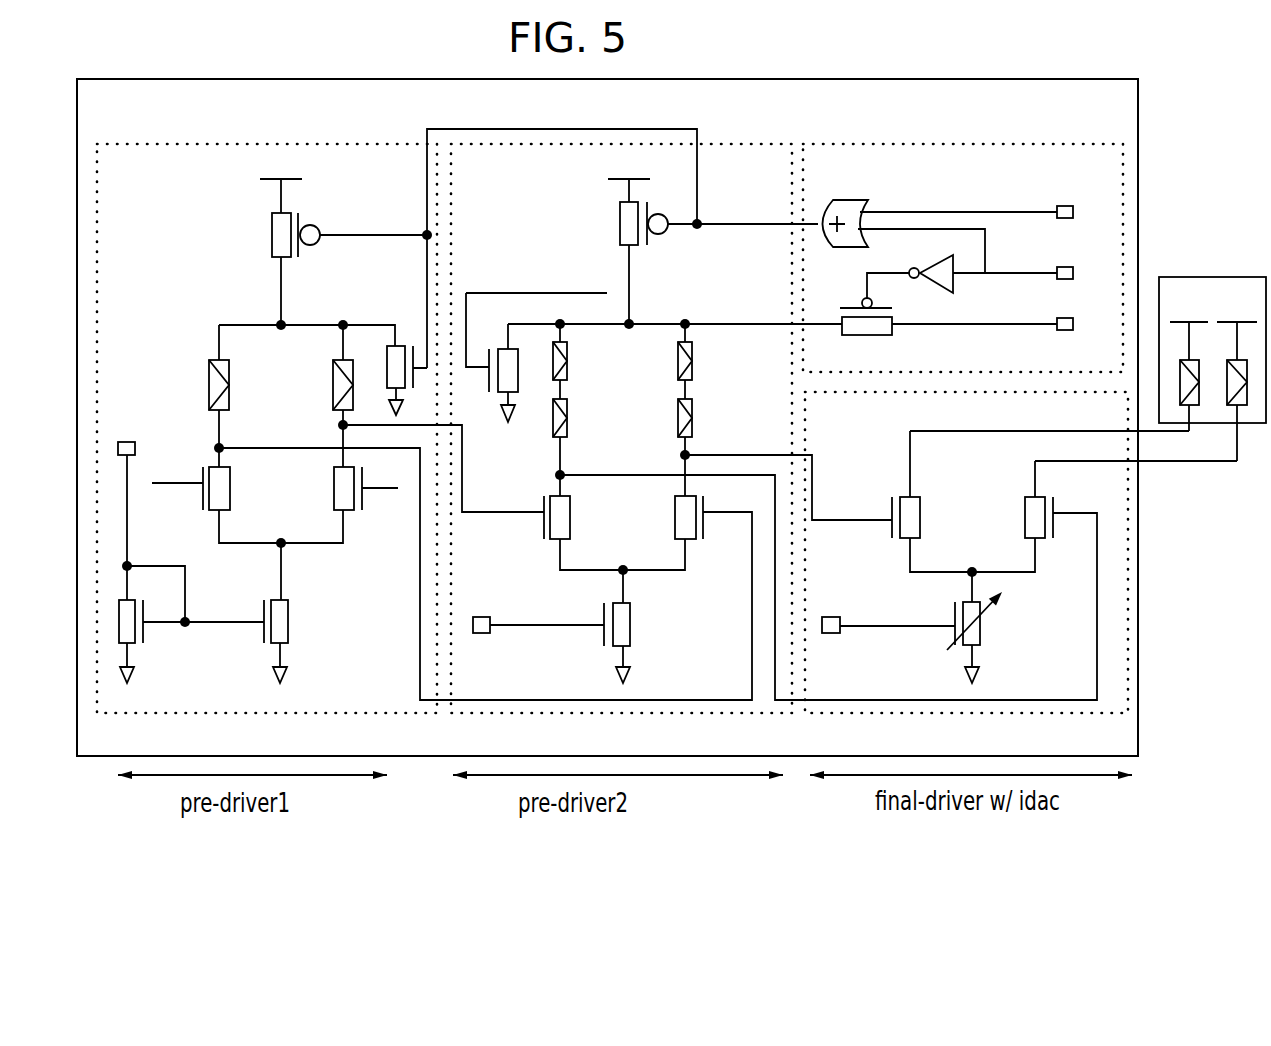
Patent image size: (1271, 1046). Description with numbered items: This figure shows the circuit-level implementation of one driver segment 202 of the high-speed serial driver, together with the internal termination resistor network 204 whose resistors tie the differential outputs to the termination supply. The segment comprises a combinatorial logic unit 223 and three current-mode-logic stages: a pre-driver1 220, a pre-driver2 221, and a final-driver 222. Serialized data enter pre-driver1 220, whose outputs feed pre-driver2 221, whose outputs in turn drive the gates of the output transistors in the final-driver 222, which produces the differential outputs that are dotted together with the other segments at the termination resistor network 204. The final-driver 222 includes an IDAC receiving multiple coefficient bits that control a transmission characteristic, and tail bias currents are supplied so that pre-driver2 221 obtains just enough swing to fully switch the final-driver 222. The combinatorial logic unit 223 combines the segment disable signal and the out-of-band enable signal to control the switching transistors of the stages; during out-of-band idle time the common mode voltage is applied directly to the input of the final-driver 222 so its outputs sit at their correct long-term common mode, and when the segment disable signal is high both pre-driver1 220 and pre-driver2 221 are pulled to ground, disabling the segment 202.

The driver segment 202 is at (1138, 160).
The internal termination resistor network 204 is at (1235, 277).
The pre-driver1 220 is at (333, 713).
The pre-driver2 221 is at (650, 713).
The final-driver 222 is at (937, 713).
The combinatorial logic unit 223 is at (960, 143).